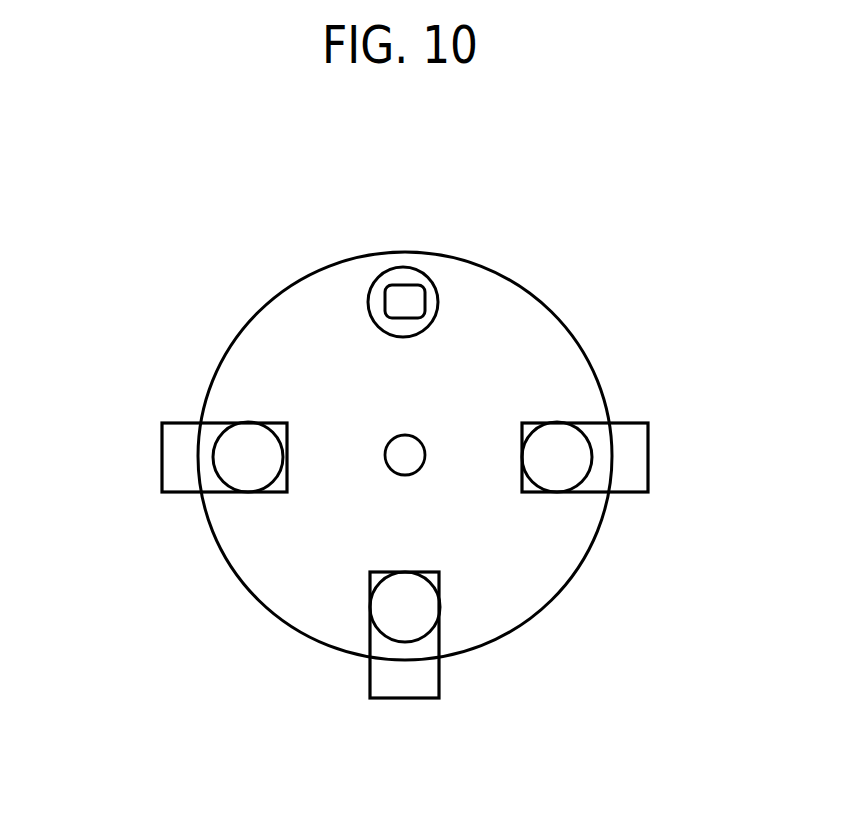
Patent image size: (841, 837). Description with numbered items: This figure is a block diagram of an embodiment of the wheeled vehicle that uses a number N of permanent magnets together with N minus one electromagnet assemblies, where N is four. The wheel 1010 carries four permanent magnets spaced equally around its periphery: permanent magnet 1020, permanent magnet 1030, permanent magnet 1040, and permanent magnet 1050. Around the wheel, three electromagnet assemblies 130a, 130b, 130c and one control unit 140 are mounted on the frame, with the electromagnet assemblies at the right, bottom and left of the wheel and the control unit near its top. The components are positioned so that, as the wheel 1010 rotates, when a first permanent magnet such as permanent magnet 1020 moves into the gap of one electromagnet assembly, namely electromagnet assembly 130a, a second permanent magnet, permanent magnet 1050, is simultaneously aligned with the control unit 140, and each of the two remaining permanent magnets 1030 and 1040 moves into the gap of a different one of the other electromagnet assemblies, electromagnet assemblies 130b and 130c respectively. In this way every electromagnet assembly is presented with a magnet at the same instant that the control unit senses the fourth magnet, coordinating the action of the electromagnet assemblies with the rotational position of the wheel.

The wheel 1010 is at (568, 327).
The permanent magnet 1050 is at (440, 297).
The control unit 140 is at (402, 308).
The permanent magnet 1020 is at (587, 469).
The permanent magnet 1030 is at (432, 619).
The permanent magnet 1040 is at (277, 469).
The electromagnet assembly 130a is at (652, 455).
The electromagnet assembly 130b is at (405, 702).
The electromagnet assembly 130c is at (157, 455).